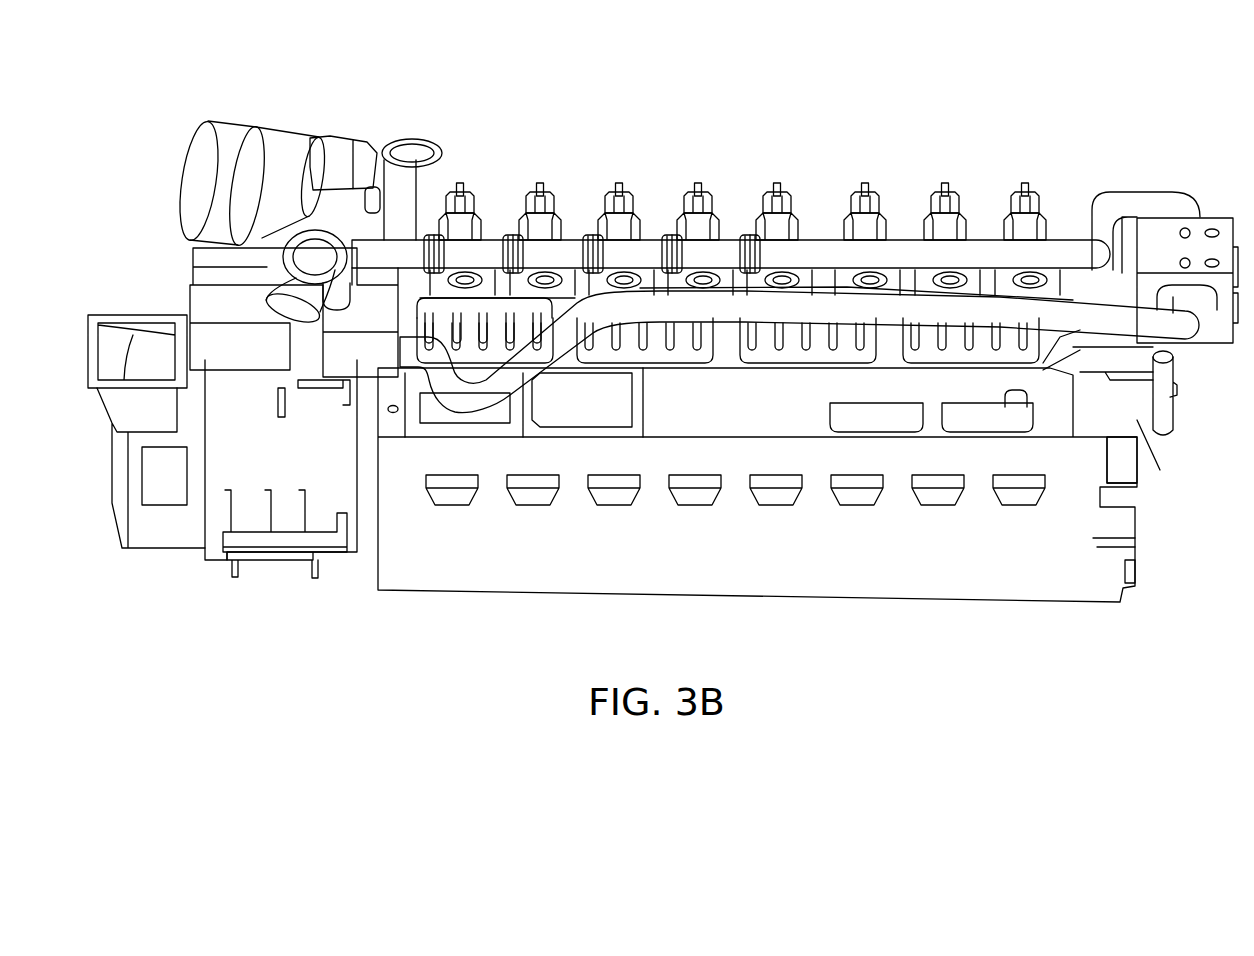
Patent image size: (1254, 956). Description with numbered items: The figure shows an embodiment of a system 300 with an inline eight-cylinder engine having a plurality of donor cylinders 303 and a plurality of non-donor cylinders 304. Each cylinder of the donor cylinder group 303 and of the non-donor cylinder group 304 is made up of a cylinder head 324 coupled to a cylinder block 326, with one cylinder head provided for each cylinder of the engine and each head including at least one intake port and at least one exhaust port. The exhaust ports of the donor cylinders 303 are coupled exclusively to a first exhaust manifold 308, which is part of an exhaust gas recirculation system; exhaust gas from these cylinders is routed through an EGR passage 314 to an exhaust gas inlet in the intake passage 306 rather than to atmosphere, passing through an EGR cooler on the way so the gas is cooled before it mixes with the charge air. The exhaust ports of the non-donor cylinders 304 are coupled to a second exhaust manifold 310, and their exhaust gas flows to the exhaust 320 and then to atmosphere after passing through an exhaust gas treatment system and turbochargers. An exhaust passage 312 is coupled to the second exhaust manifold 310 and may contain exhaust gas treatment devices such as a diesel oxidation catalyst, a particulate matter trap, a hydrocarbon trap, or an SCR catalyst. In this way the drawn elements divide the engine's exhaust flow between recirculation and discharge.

The system 300 is at (1122, 78).
The donor cylinders 303 is at (1000, 158).
The non-donor cylinders 304 is at (625, 160).
The intake passage 306 is at (1180, 322).
The first exhaust manifold 308 is at (1030, 272).
The second exhaust manifold 310 is at (622, 260).
The exhaust passage 312 is at (408, 250).
The EGR passage 314 is at (1173, 193).
The exhaust 320 is at (257, 85).
The cylinder head 324 is at (858, 197).
The cylinder block 326 is at (1138, 422).